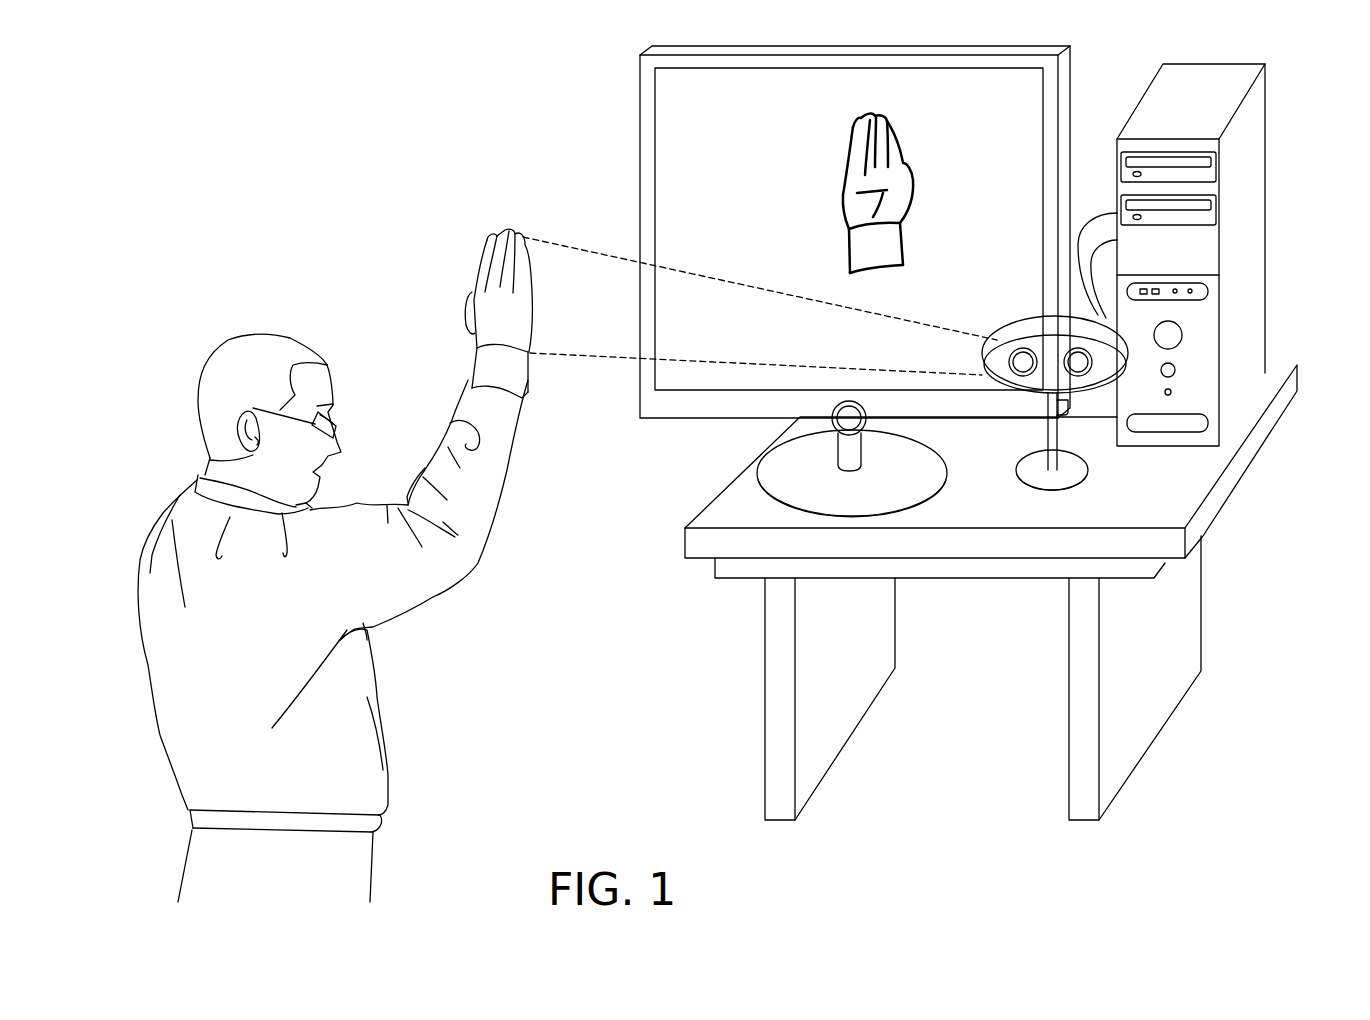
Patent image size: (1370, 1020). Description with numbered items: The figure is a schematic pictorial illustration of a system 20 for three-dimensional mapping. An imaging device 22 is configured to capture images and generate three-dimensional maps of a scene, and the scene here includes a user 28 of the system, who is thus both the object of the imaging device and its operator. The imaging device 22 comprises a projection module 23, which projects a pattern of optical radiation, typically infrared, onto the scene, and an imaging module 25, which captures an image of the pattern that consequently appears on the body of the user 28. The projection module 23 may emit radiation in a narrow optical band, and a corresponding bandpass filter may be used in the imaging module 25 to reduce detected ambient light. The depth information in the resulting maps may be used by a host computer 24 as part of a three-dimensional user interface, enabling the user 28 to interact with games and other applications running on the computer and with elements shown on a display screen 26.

The system 20 is at (455, 86).
The imaging device 22 is at (1100, 380).
The projection module 23 is at (1083, 364).
The host computer 24 is at (1250, 172).
The imaging module 25 is at (1023, 365).
The display screen 26 is at (660, 118).
The user 28 is at (478, 265).